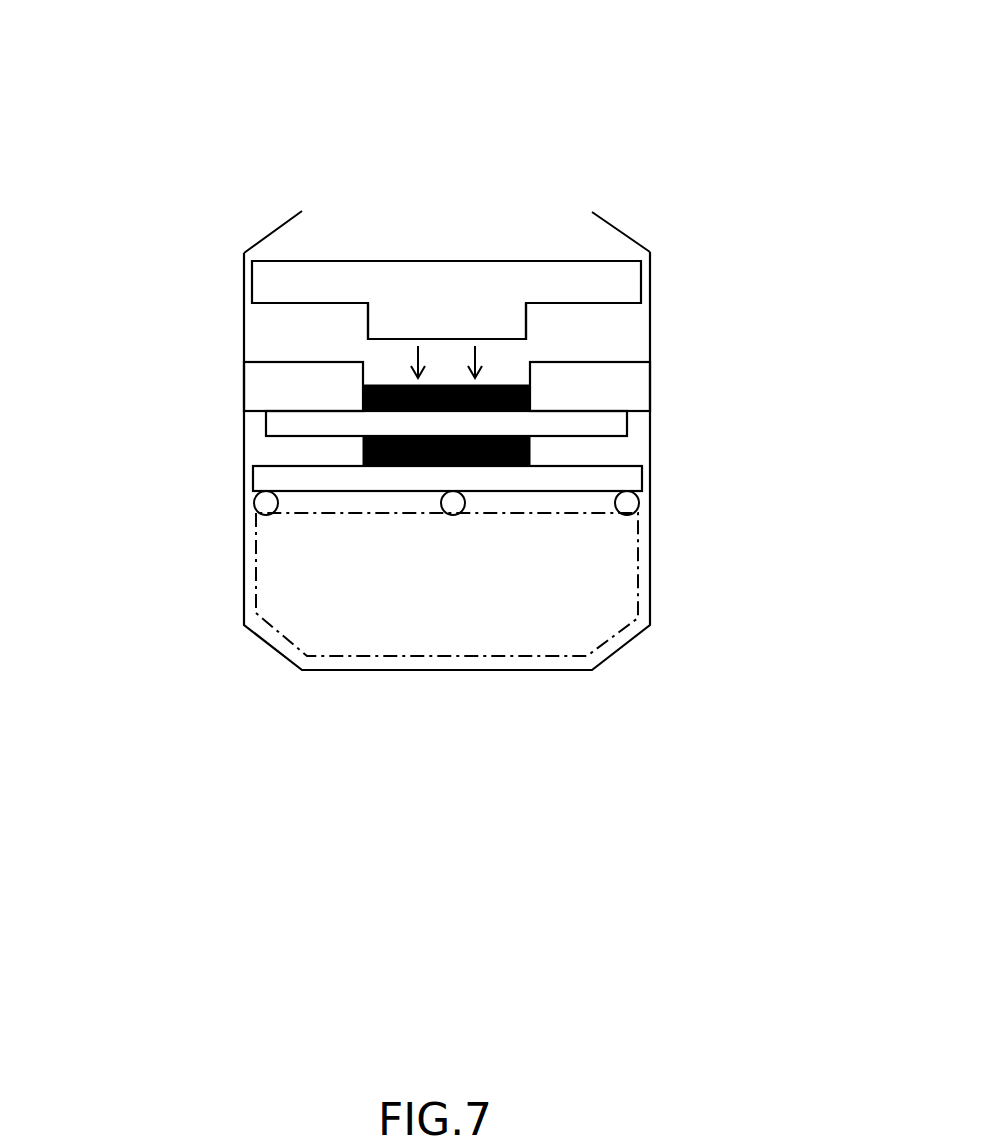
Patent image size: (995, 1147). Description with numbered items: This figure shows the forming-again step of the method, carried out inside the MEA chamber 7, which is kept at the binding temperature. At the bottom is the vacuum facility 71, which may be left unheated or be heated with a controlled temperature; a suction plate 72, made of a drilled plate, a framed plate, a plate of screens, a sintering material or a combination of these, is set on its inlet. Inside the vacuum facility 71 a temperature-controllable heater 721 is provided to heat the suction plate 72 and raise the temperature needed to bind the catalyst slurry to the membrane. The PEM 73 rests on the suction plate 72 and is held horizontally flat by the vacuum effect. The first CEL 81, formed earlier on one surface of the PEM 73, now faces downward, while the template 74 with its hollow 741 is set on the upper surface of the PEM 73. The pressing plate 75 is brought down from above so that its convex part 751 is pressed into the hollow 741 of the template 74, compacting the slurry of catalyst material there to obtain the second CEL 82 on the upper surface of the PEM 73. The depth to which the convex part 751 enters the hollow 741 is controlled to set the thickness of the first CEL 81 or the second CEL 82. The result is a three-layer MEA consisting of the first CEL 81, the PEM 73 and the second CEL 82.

The MEA chamber 7 is at (282, 168).
The vacuum facility 71 is at (630, 560).
The suction plate 72 is at (630, 480).
The temperature-controllable heater 721 is at (266, 503).
The PEM 73 is at (617, 422).
The template 74 is at (640, 390).
The hollow 741 is at (403, 375).
The pressing plate 75 is at (547, 272).
The convex part 751 is at (507, 326).
The first CEL 81 is at (363, 450).
The second CEL 82 is at (452, 385).